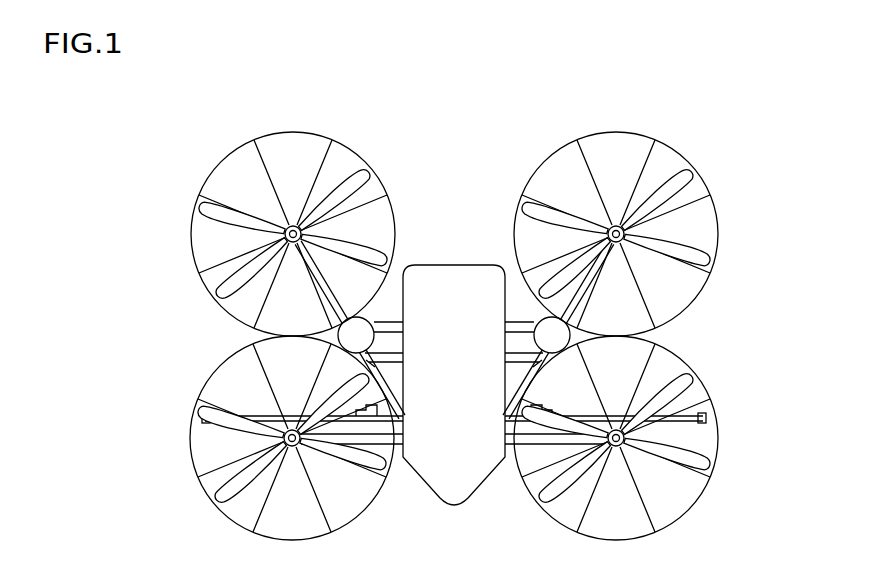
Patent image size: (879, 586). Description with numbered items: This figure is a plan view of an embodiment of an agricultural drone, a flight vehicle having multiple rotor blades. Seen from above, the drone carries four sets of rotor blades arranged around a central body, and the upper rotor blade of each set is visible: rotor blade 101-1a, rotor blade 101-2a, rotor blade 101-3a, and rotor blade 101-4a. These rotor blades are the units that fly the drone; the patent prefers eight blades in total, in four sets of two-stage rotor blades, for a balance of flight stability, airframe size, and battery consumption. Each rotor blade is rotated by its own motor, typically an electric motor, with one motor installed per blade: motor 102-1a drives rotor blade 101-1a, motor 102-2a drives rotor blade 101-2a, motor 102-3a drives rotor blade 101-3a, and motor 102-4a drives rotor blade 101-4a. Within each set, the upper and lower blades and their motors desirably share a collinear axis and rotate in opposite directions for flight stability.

The rotor blade 101-1a is at (667, 182).
The motor 102-1a is at (615, 226).
The rotor blade 101-2a is at (681, 449).
The motor 102-2a is at (623, 442).
The rotor blade 101-3a is at (340, 182).
The motor 102-3a is at (294, 226).
The rotor blade 101-4a is at (233, 495).
The motor 102-4a is at (297, 446).